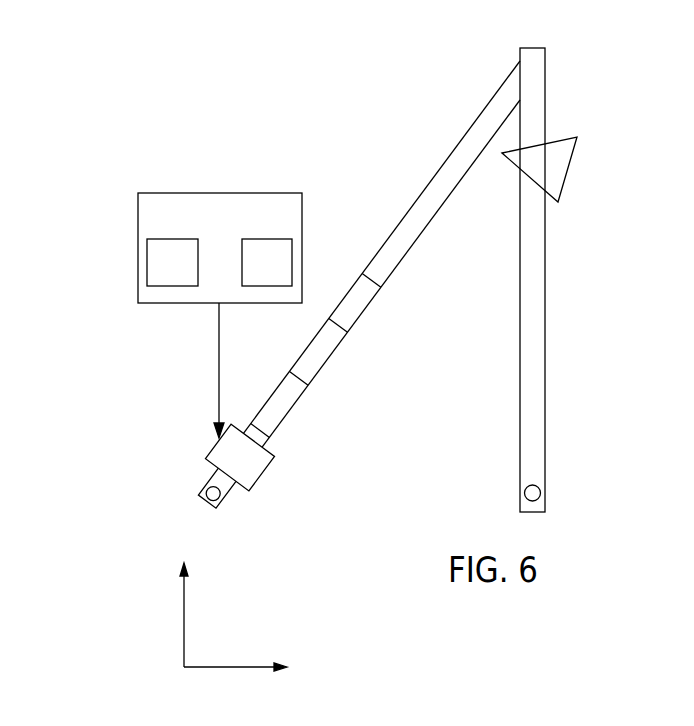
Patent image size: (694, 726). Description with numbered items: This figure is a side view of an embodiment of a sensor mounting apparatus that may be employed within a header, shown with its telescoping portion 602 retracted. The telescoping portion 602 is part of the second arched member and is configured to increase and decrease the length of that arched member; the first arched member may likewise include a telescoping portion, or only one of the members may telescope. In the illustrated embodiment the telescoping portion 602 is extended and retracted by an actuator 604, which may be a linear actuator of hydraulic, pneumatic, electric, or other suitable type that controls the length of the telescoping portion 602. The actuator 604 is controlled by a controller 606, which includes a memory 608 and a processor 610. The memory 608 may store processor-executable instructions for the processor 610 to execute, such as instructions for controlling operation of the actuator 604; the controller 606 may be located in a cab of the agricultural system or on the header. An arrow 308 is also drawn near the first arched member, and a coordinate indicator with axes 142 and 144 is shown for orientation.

The direction of rotation 308 is at (568, 173).
The telescoping portion 602 is at (327, 350).
The actuator 604 is at (262, 482).
The controller 606 is at (219, 261).
The memory 608 is at (172, 286).
The processor 610 is at (265, 286).
The x-axis 142 is at (230, 667).
The y-axis 144 is at (184, 620).